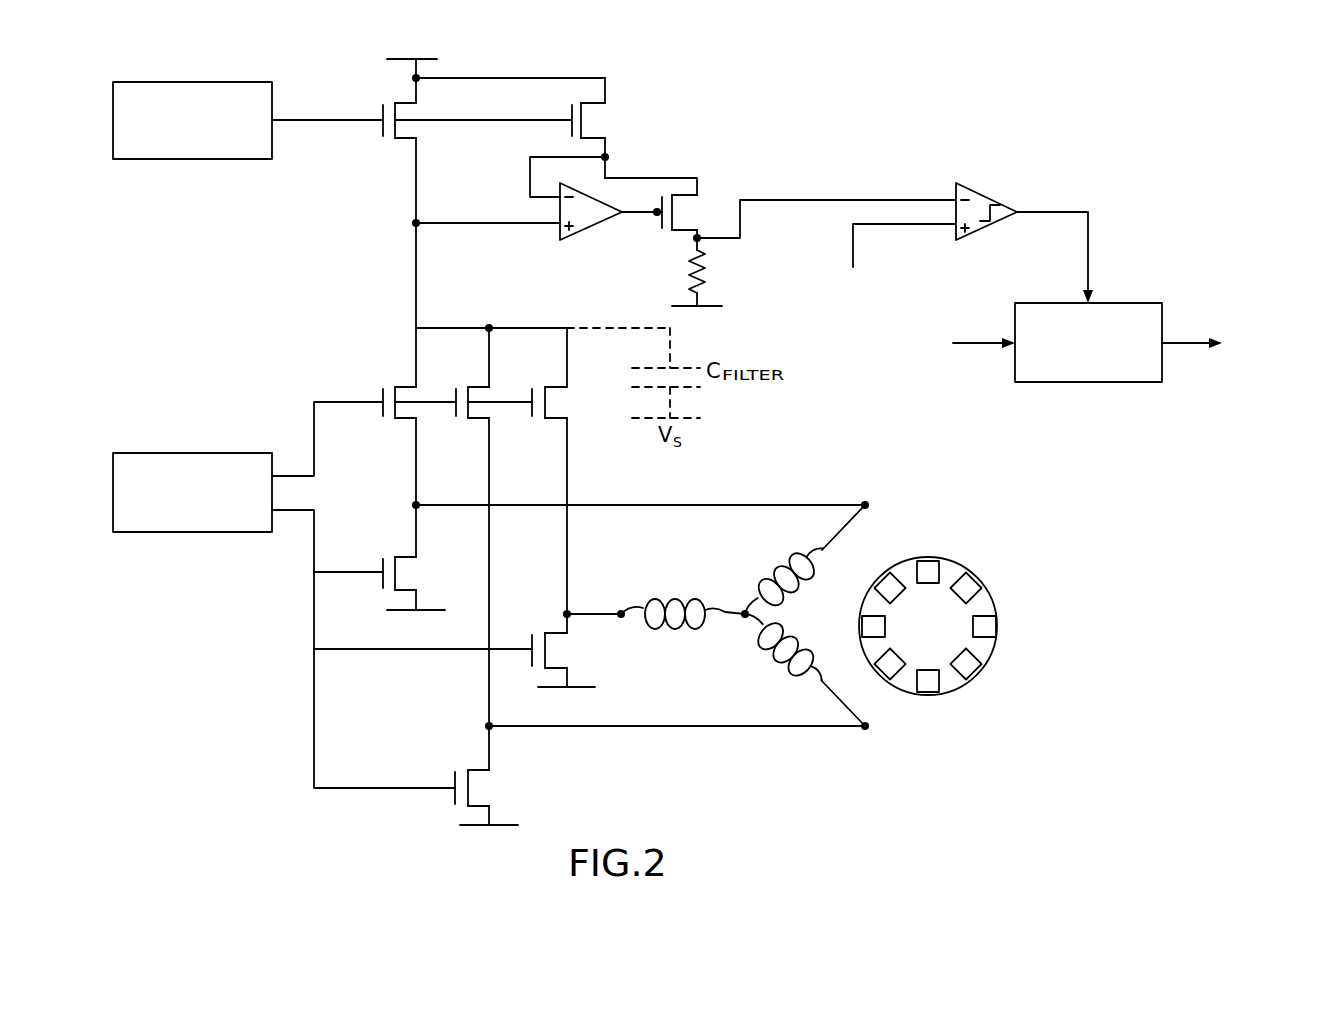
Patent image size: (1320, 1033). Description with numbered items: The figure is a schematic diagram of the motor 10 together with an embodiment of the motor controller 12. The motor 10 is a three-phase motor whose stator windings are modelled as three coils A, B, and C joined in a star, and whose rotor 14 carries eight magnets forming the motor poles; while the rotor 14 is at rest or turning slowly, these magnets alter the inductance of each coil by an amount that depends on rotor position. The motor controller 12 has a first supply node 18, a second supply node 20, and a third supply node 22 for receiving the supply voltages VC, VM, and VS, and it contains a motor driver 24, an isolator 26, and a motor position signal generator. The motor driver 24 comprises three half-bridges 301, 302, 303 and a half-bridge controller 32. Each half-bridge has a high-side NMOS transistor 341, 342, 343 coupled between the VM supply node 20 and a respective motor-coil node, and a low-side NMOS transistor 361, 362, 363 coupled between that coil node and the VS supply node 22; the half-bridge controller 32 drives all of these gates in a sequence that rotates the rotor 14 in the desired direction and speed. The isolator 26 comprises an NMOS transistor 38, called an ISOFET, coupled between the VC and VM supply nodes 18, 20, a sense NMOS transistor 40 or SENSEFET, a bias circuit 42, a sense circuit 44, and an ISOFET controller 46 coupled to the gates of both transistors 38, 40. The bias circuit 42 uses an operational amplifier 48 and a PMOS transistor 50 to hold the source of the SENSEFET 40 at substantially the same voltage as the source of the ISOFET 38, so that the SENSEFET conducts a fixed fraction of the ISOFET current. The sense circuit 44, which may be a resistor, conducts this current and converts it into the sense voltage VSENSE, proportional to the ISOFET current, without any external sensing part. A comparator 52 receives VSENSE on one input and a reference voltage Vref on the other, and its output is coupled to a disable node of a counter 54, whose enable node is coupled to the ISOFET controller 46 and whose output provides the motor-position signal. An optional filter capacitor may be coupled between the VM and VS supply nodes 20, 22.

The motor 10 is at (1002, 506).
The motor controller 12 is at (978, 110).
The rotor 14 is at (980, 576).
The first supply node 18 is at (437, 59).
The second supply node 20 is at (508, 328).
The third supply node 22 is at (722, 306).
The motor driver 24 is at (259, 618).
The isolator 26 is at (680, 96).
The first half-bridge 301 is at (371, 376).
The second half-bridge 302 is at (480, 378).
The third half-bridge 303 is at (590, 390).
The half-bridge controller 32 is at (166, 453).
The high-side NMOS transistor 341 is at (396, 420).
The high-side NMOS transistor 342 is at (476, 420).
The high-side NMOS transistor 343 is at (552, 420).
The low-side NMOS transistor 361 is at (383, 592).
The low-side NMOS transistor 362 is at (490, 770).
The low-side NMOS transistor 363 is at (568, 632).
The NMOS transistor (ISOFET) 38 is at (396, 140).
The sense NMOS transistor (SENSEFET) 40 is at (592, 112).
The bias circuit 42 is at (676, 168).
The sense circuit 44 is at (704, 258).
The ISOFET controller 46 is at (133, 160).
The operational amplifier 48 is at (580, 240).
The PMOS transistor 50 is at (697, 192).
The comparator 52 is at (980, 190).
The counter 54 is at (1125, 303).